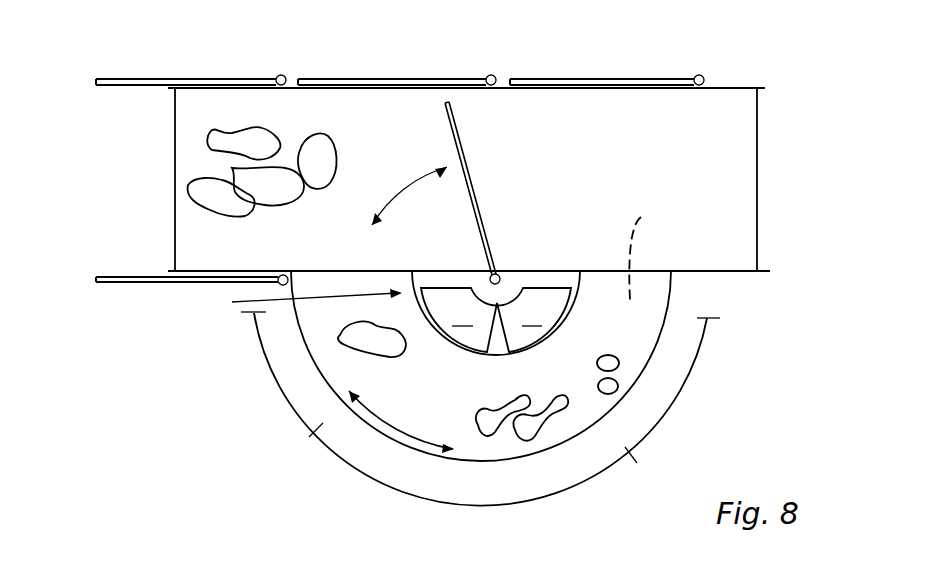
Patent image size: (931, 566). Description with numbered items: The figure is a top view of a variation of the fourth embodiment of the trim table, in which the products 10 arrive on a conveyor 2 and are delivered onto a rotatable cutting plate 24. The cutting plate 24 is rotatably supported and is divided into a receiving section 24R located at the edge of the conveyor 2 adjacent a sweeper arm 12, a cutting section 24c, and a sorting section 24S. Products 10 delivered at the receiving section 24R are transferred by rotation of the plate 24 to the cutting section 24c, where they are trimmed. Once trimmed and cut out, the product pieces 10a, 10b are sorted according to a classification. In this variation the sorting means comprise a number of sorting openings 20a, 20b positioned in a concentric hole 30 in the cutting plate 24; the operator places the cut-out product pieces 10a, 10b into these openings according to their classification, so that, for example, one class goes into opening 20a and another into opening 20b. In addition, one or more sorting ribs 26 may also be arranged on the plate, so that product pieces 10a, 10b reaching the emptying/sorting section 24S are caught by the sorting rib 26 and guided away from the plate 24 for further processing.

The conveyor 2 is at (600, 130).
The products 10 is at (322, 114).
The product pieces 10a is at (481, 428).
The product pieces 10b is at (612, 363).
The sweeper arm 12 is at (455, 117).
The sorting opening 20a is at (453, 333).
The sorting opening 20b is at (520, 333).
The rotatable cutting plate 24 is at (550, 440).
The receiving section 24R is at (276, 408).
The sorting section 24S is at (742, 424).
The cutting section 24c is at (512, 537).
The sorting rib 26 is at (633, 275).
The concentric hole 30 is at (297, 303).